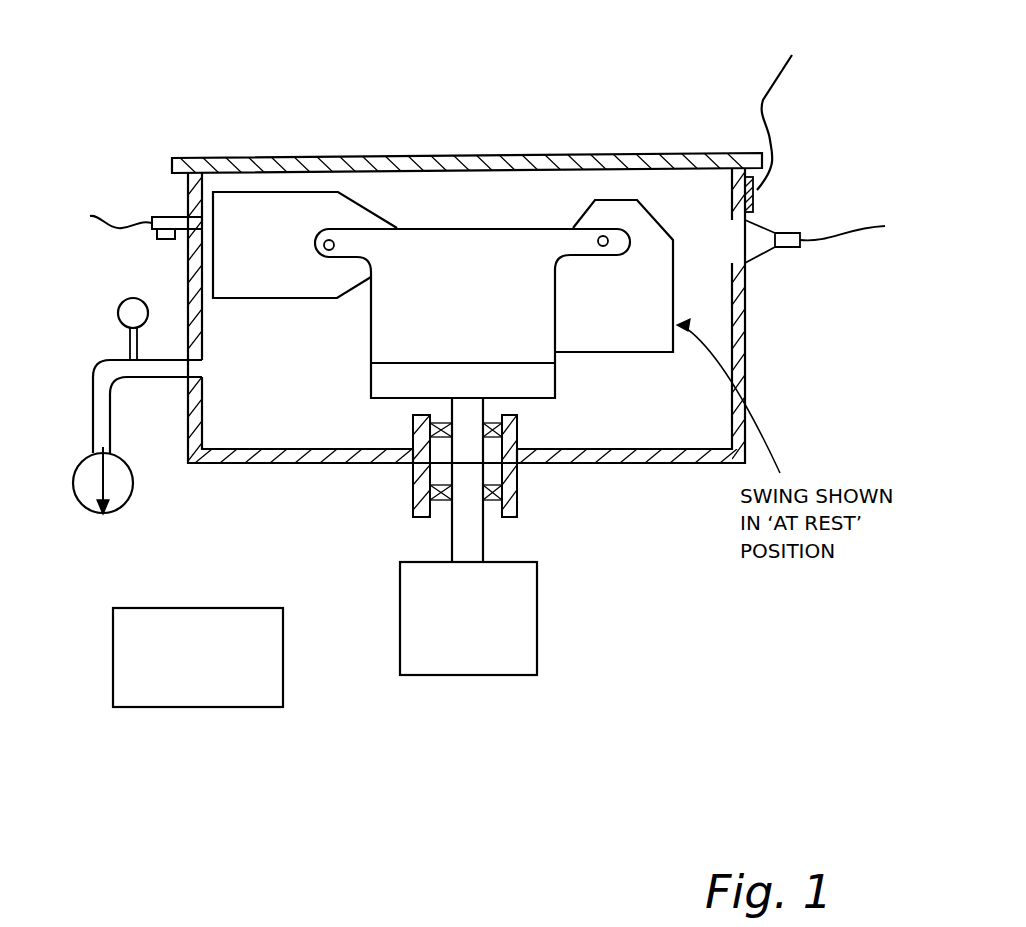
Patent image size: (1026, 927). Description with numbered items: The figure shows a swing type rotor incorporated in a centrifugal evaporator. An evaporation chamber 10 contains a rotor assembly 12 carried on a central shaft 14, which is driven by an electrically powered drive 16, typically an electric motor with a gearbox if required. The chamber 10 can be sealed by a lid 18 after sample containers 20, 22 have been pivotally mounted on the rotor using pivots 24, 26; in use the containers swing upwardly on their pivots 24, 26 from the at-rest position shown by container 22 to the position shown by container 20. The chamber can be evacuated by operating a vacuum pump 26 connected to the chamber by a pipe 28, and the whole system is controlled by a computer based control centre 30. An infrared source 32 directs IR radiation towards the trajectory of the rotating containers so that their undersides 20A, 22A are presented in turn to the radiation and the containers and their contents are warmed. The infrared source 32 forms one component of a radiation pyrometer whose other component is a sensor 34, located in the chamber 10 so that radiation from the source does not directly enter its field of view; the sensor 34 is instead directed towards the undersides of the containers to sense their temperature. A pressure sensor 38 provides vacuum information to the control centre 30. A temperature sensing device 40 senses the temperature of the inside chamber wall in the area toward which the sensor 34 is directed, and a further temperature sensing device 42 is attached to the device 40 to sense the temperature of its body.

The evaporation chamber 10 is at (628, 463).
The rotor assembly 12 is at (371, 378).
The central shaft 14 is at (453, 527).
The electrically powered drive 16 is at (490, 634).
The lid 18 is at (343, 157).
The sample container 20 is at (280, 263).
The underside of container 20A is at (205, 300).
The sample container 22 is at (647, 313).
The underside of container 22A is at (628, 352).
The pivot 24 is at (335, 262).
The pivot / vacuum pump 26 is at (598, 262).
The pipe 28 is at (103, 367).
The control centre 30 is at (212, 671).
The infrared source 32 is at (757, 253).
The sensor 34 is at (770, 70).
The pressure sensor 38 is at (118, 313).
The temperature sensing device 40 is at (157, 208).
The further temperature sensing device 42 is at (155, 240).